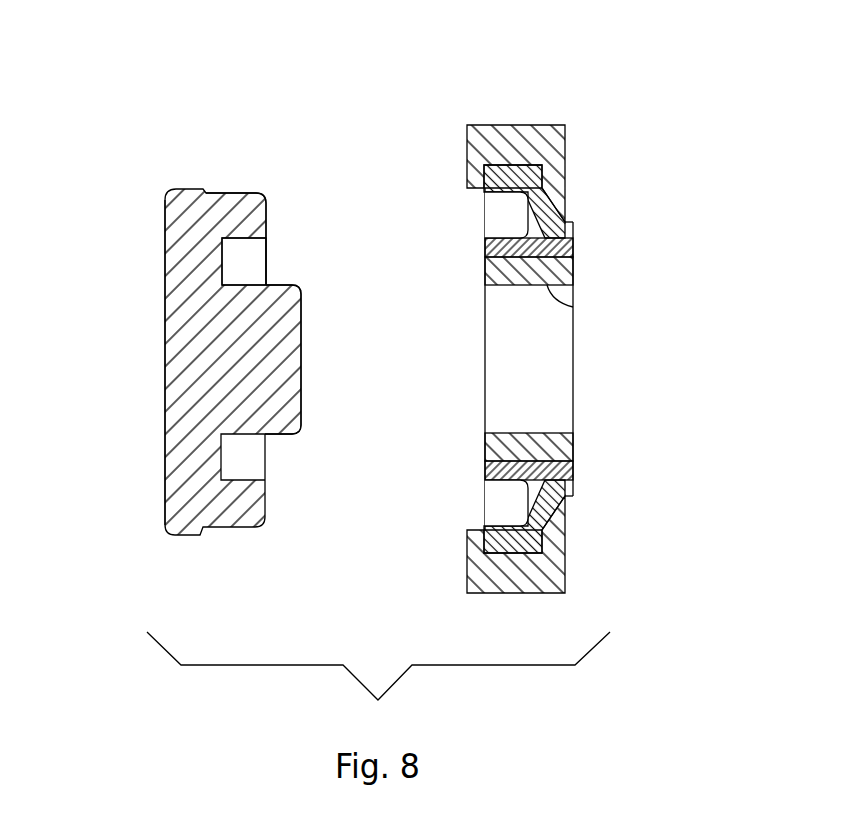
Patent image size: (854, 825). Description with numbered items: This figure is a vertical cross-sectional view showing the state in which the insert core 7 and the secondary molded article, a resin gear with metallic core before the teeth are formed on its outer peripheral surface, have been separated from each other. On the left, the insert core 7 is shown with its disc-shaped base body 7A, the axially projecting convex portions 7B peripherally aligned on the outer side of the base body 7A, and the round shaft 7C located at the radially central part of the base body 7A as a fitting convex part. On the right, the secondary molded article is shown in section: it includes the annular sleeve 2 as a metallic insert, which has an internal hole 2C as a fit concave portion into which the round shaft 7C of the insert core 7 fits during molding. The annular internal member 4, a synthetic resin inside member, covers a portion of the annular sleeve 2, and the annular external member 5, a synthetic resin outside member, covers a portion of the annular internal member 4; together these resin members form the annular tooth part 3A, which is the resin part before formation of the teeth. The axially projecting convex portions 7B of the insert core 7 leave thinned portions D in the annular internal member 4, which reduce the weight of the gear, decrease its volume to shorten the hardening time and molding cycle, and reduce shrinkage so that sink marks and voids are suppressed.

The insert core 7 is at (160, 211).
The disc-shaped base body 7A is at (165, 326).
The axially projecting convex portions 7B is at (270, 206).
The round shaft 7C is at (302, 330).
The annular external member 5 is at (570, 182).
The annular internal member 4 is at (578, 346).
The annular tooth part 3A is at (607, 351).
The annular sleeve 2 is at (576, 270).
The internal hole 2C is at (552, 296).
The thinned portions D is at (485, 203).